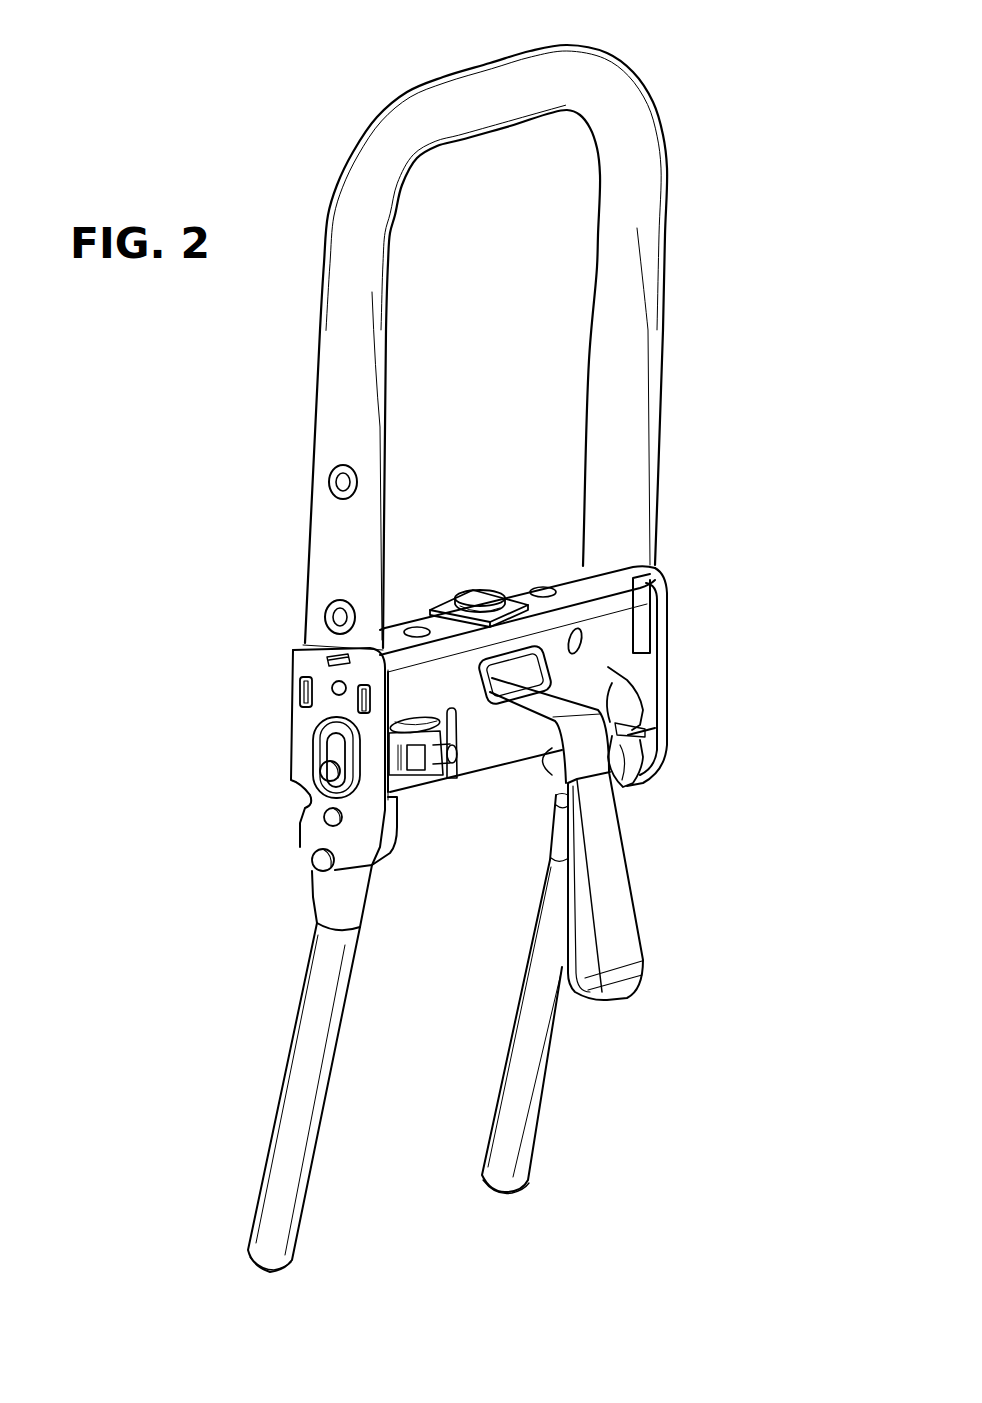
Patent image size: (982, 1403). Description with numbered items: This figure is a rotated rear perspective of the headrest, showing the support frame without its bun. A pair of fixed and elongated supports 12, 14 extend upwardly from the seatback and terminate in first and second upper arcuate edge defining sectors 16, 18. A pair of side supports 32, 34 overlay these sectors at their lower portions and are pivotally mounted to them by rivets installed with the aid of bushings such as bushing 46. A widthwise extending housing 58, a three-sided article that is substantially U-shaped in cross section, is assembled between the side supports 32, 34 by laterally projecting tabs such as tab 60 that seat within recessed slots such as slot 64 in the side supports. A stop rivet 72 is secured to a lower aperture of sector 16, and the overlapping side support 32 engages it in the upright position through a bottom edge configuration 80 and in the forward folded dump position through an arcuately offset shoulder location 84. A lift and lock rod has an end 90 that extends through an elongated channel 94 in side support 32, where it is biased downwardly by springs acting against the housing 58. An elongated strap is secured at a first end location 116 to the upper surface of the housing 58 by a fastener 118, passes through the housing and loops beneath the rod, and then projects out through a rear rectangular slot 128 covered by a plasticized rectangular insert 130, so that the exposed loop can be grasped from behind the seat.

The fixed elongated support 12 is at (288, 1126).
The fixed elongated support 14 is at (517, 1063).
The first upper arcuate edge defining sector 16 is at (385, 853).
The second upper arcuate edge defining sector 18 is at (633, 758).
The side support 32 is at (362, 819).
The side support 34 is at (668, 714).
The bushing 46 is at (323, 817).
The housing 58 is at (567, 584).
The laterally projecting tab 60 is at (300, 692).
The recessed slot 64 is at (362, 722).
The stop rivet 72 is at (312, 862).
The bottom edge configuration 80 is at (383, 853).
The shoulder location 84 is at (300, 788).
The rod end 90 is at (322, 773).
The elongated channel 94 is at (348, 763).
The first end location of strap 116 is at (447, 603).
The fastener 118 is at (478, 596).
The rear rectangular slot 128 is at (477, 691).
The rectangular insert 130 is at (581, 641).